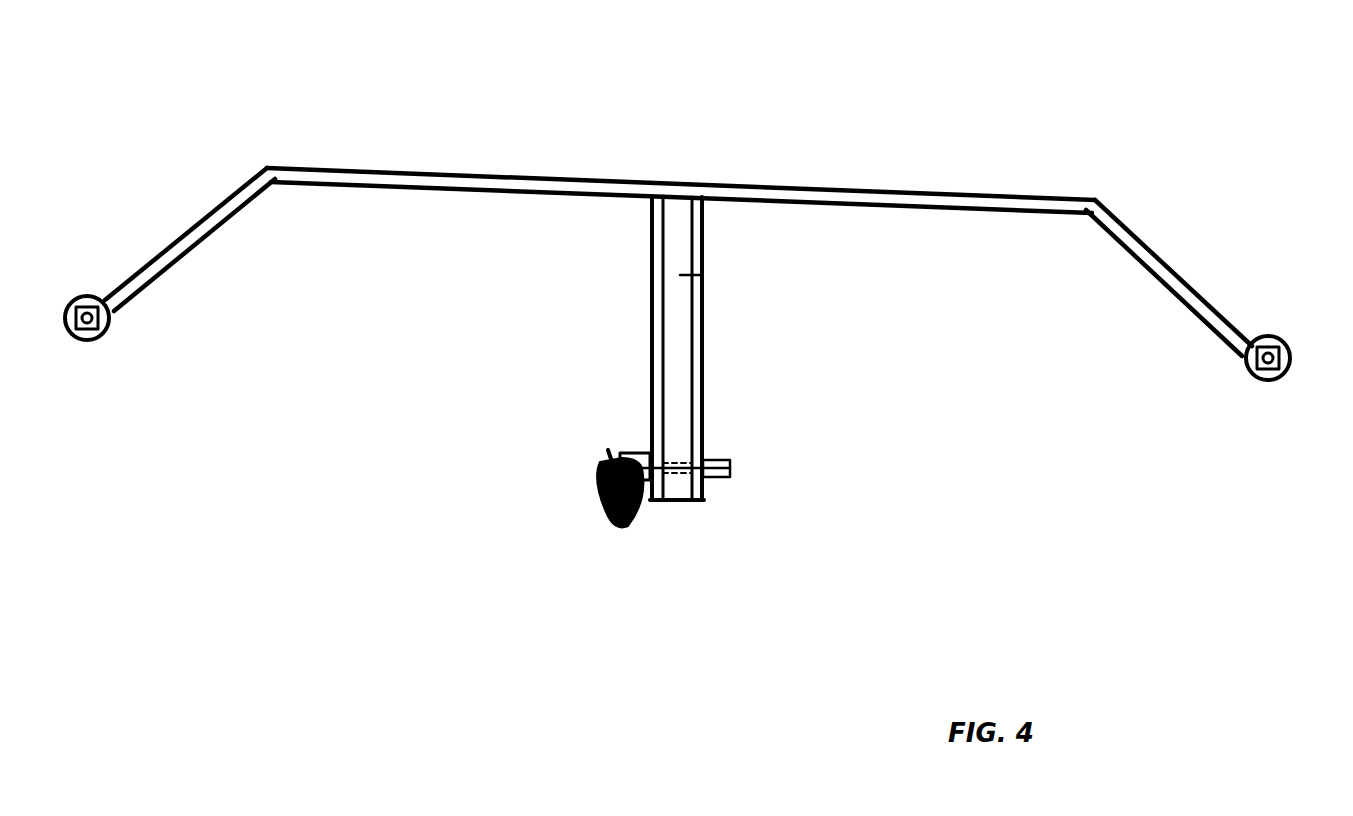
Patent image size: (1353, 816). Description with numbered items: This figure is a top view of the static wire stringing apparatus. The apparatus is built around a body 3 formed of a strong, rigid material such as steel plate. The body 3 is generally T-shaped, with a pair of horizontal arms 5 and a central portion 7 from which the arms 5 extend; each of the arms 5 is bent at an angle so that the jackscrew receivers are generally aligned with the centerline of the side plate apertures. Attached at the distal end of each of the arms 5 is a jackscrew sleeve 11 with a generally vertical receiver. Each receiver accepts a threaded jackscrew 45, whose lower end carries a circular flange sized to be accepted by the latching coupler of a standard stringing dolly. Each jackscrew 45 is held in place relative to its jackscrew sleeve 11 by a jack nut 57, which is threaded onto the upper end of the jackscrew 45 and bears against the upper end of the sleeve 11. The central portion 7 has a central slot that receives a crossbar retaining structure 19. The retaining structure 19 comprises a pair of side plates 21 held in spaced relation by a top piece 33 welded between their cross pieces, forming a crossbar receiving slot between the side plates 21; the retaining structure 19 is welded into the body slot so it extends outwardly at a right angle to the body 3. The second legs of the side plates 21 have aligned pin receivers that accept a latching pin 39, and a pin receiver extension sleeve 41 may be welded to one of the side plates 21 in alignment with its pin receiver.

The body 3 is at (678, 191).
The horizontal arms 5 is at (200, 229).
The central portion 7 is at (790, 186).
The jackscrew sleeve 11 is at (108, 320).
The crossbar retaining structure 19 is at (669, 403).
The side plates 21 is at (652, 306).
The top piece 33 is at (688, 274).
The latching pin 39 is at (600, 466).
The pin receiver extension sleeve 41 is at (632, 452).
The threaded jackscrew 45 is at (100, 325).
The jack nut 57 is at (88, 340).